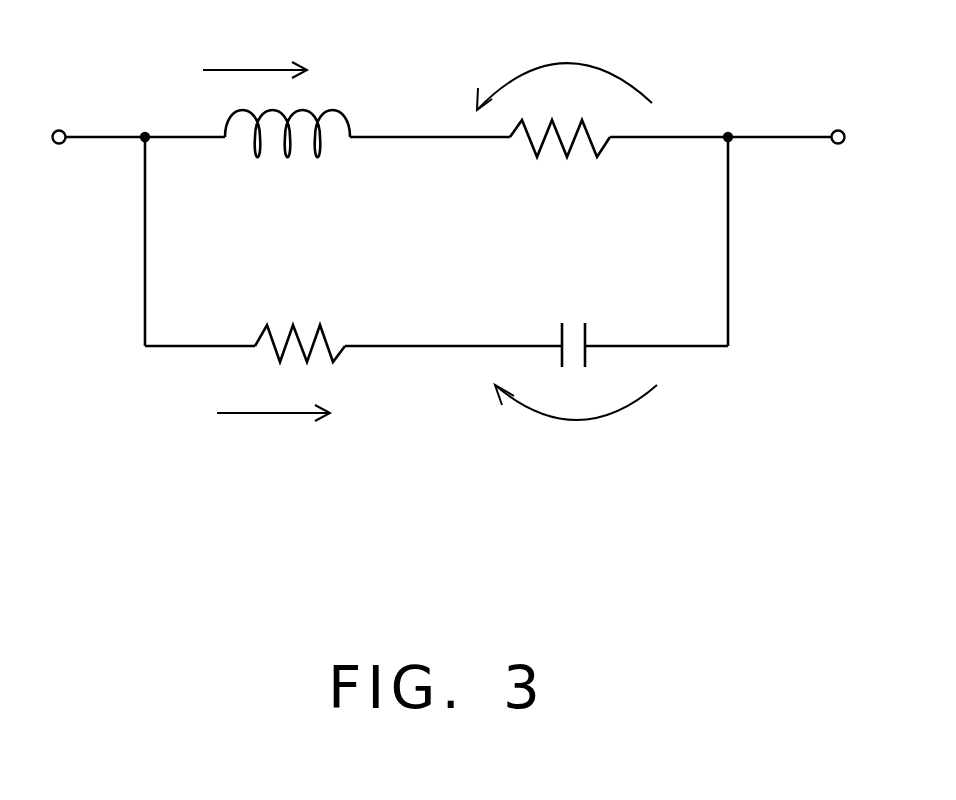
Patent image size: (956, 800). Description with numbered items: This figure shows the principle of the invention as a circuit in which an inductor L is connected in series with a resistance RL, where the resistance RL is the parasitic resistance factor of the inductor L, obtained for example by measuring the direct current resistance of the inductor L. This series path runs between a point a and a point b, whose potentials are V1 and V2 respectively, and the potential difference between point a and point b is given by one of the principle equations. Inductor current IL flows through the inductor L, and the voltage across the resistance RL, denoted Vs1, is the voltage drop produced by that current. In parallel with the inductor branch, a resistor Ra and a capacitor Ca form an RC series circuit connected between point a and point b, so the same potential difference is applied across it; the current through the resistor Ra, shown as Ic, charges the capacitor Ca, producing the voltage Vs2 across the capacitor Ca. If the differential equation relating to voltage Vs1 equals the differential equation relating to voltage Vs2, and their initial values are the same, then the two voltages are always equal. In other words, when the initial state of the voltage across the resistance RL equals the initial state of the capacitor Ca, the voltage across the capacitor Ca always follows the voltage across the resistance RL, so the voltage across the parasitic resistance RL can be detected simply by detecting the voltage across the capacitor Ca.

The potential at point a V1 is at (60, 114).
The potential at point b V2 is at (850, 112).
The point a is at (145, 131).
The point b is at (728, 130).
The inductor L is at (287, 155).
The parasitic resistance RL is at (560, 162).
The resistor Ra is at (300, 320).
The capacitor Ca is at (581, 318).
The inductor current IL is at (255, 50).
The capacitor branch current Ic is at (273, 435).
The voltage across resistor RL Vs1 is at (564, 66).
The voltage across capacitor Ca Vs2 is at (576, 430).